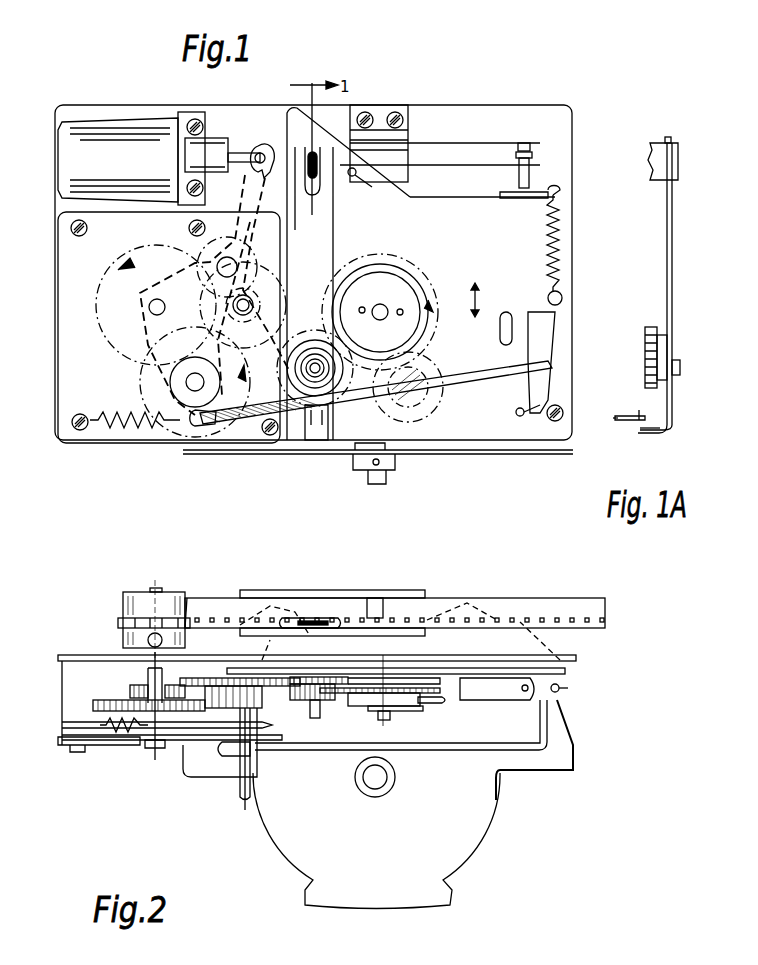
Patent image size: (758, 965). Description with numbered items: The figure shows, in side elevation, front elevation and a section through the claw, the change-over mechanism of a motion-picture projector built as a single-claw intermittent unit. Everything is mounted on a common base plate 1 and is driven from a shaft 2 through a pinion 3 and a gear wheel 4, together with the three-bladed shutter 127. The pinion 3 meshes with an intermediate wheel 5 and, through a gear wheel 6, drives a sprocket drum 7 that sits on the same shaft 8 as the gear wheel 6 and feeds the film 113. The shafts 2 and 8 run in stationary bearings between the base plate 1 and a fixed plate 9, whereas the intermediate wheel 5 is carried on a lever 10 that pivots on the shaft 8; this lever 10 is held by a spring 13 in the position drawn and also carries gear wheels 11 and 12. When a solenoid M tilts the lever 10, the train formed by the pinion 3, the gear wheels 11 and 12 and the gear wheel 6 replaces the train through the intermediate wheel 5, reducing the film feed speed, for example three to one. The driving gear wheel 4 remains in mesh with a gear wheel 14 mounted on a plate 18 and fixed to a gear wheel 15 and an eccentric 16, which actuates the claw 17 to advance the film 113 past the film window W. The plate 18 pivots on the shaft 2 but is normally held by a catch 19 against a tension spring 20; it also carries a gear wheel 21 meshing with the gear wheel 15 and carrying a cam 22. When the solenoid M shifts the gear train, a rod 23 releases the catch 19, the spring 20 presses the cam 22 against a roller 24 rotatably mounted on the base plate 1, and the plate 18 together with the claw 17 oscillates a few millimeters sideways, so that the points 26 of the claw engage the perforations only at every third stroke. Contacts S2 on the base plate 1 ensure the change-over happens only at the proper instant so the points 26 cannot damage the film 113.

In FIG. 1, the base plate 1 is at (555, 128).
In FIG. 2, the base plate 1 is at (62, 655).
In FIG. 1, the solenoid M is at (62, 158).
In FIG. 1, the shaft 2 is at (252, 290).
In FIG. 2, the shaft 2 is at (244, 790).
In FIG. 1, the pinion 3 is at (253, 305).
In FIG. 2, the pinion 3 is at (258, 698).
In FIG. 1, the gear wheel 4 is at (262, 255).
In FIG. 2, the gear wheel 4 is at (262, 690).
In FIG. 1, the intermediate wheel 5 is at (224, 257).
In FIG. 2, the intermediate wheel 5 is at (212, 710).
In FIG. 1, the gear wheel 6 is at (110, 310).
In FIG. 2, the gear wheel 6 is at (98, 700).
In FIG. 2, the sprocket drum 7 is at (140, 600).
In FIG. 1, the shaft 8 is at (163, 301).
In FIG. 2, the shaft 8 is at (150, 752).
In FIG. 1, the fixed plate 9 is at (72, 377).
In FIG. 2, the fixed plate 9 is at (66, 738).
In FIG. 1, the lever 10 is at (246, 188).
In FIG. 2, the lever 10 is at (282, 740).
In FIG. 1, the gear wheel 11 is at (236, 393).
In FIG. 2, the gear wheel 11 is at (130, 686).
In FIG. 1, the gear wheel 12 is at (185, 383).
In FIG. 1, the spring 13 is at (110, 416).
In FIG. 2, the spring 13 is at (118, 740).
In FIG. 1, the gear wheel 14 is at (330, 372).
In FIG. 1A, the gear wheel 14 is at (655, 327).
In FIG. 2, the gear wheel 14 is at (330, 677).
In FIG. 1, the gear wheel 15 is at (315, 355).
In FIG. 1A, the gear wheel 15 is at (665, 340).
In FIG. 2, the gear wheel 15 is at (316, 718).
In FIG. 1, the eccentric 16 is at (318, 378).
In FIG. 1A, the eccentric 16 is at (678, 362).
In FIG. 1, the claw 17 is at (320, 226).
In FIG. 1A, the claw 17 is at (672, 247).
In FIG. 1, the plate 18 is at (450, 214).
In FIG. 2, the plate 18 is at (565, 671).
In FIG. 1, the catch 19 is at (545, 332).
In FIG. 1, the tension spring 20 is at (545, 227).
In FIG. 2, the tension spring 20 is at (560, 690).
In FIG. 1, the gear wheel 21 is at (395, 262).
In FIG. 2, the gear wheel 21 is at (440, 703).
In FIG. 1, the cam 22 is at (365, 300).
In FIG. 2, the cam 22 is at (403, 708).
In FIG. 1, the rod 23 is at (483, 380).
In FIG. 2, the rod 23 is at (550, 746).
In FIG. 1, the roller 24 is at (422, 410).
In FIG. 1, the points of the claw 26 is at (312, 440).
In FIG. 1A, the points of the claw 26 is at (642, 433).
In FIG. 2, the points of the claw 26 is at (295, 618).
In FIG. 1, the contacts S2 is at (529, 164).
In FIG. 2, the contacts S2 is at (485, 692).
In FIG. 2, the film window W is at (376, 600).
In FIG. 1A, the film 113 is at (630, 422).
In FIG. 2, the film 113 is at (208, 606).
In FIG. 1A, the three-bladed shutter 127 is at (600, 434).
In FIG. 2, the three-bladed shutter 127 is at (440, 865).